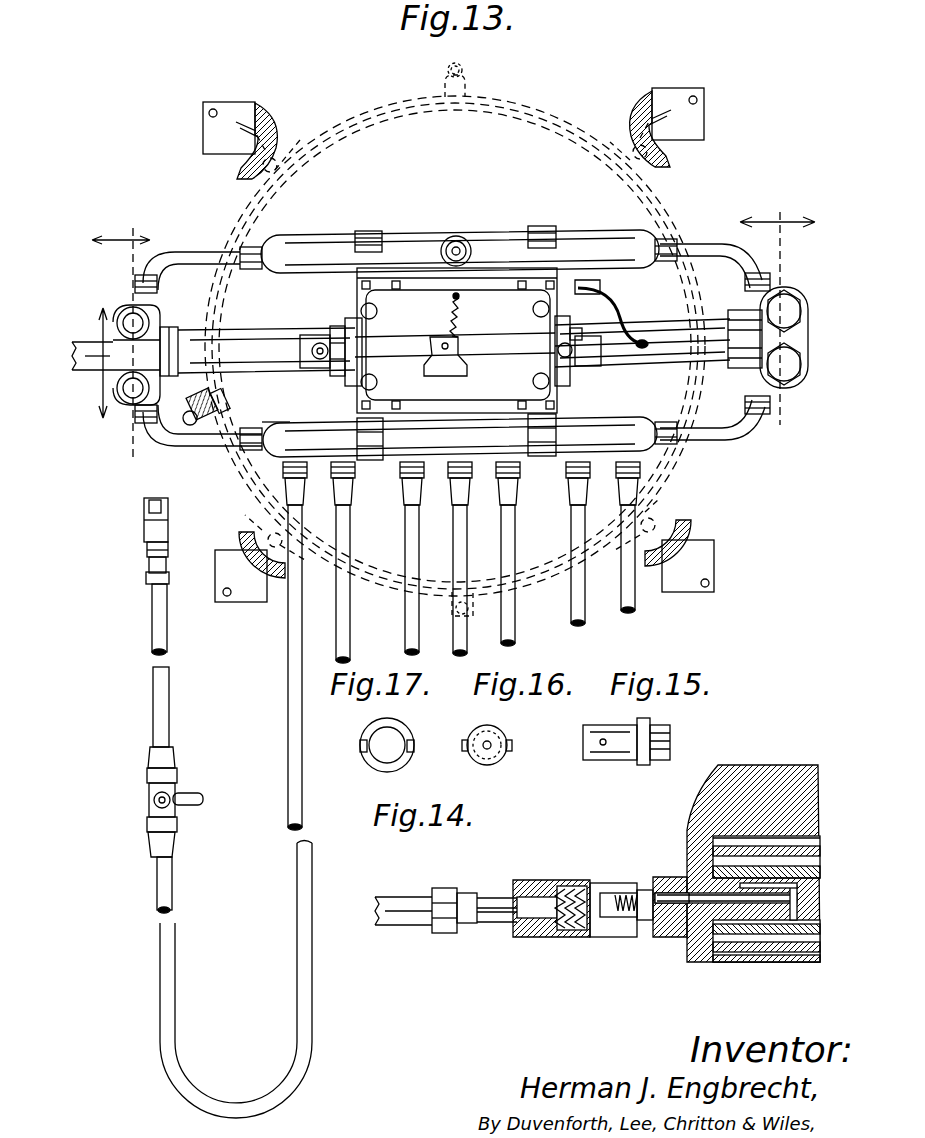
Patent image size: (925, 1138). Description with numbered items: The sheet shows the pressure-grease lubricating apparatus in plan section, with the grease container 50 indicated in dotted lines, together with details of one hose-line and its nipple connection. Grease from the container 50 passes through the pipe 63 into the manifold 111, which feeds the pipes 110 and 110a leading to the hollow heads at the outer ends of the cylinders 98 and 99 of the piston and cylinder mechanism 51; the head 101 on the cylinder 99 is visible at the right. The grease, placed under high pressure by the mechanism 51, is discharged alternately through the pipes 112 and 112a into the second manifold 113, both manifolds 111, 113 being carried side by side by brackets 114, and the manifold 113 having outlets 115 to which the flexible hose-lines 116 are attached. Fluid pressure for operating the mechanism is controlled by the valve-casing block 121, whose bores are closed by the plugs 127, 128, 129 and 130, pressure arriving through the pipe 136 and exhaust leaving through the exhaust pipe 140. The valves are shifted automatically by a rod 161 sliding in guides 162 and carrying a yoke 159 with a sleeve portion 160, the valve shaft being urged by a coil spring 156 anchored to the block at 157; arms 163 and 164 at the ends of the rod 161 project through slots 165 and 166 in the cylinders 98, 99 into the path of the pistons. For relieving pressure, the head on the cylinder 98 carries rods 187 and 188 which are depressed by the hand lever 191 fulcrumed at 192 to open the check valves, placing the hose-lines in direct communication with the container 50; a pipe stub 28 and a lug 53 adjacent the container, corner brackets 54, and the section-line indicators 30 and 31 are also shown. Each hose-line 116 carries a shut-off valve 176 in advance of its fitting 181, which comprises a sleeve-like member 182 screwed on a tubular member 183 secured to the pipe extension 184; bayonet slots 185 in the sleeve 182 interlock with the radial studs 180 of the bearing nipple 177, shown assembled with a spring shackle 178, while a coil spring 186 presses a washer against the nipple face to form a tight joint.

In FIG. 13, the pipe 28 is at (92, 356).
In FIG. 13, the section line 30 is at (121, 332).
In FIG. 13, the section line 31 is at (777, 306).
In FIG. 13, the container 50 is at (455, 113).
In FIG. 13, the piston and cylinder mechanism 51 is at (621, 366).
In FIG. 13, the lug 53 is at (475, 605).
In FIG. 13, the bracket 54 is at (258, 122).
In FIG. 13, the pipe 63 is at (462, 237).
In FIG. 13, the cylinder 98 is at (250, 330).
In FIG. 13, the cylinder 99 is at (662, 326).
In FIG. 13, the hollow head 101 is at (797, 345).
In FIG. 13, the pipe 110 is at (190, 250).
In FIG. 13, the pipe 110a is at (700, 242).
In FIG. 13, the manifold 111 is at (414, 235).
In FIG. 13, the pipe 112 is at (195, 447).
In FIG. 13, the pipe 112a is at (735, 442).
In FIG. 13, the manifold 113 is at (697, 482).
In FIG. 13, the brackets 114 is at (365, 230).
In FIG. 13, the outlets 115 is at (355, 485).
In FIG. 13, the flexible hose-lines 116 is at (345, 582).
In FIG. 13, the valve-casing block 121 is at (340, 325).
In FIG. 13, the plug 127 is at (352, 320).
In FIG. 13, the plug 128 is at (568, 320).
In FIG. 13, the plug 129 is at (270, 432).
In FIG. 13, the plug 130 is at (560, 392).
In FIG. 13, the pipe 136 is at (600, 316).
In FIG. 13, the exhaust pipe 140 is at (290, 394).
In FIG. 13, the coil spring 156 is at (458, 325).
In FIG. 13, the spring connection 157 is at (460, 312).
In FIG. 13, the yoke 159 is at (443, 78).
In FIG. 13, the sleeve portion 160 is at (465, 72).
In FIG. 13, the rod 161 is at (390, 337).
In FIG. 13, the guides 162 is at (374, 312).
In FIG. 13, the arm 163 is at (312, 338).
In FIG. 13, the arm 164 is at (566, 370).
In FIG. 13, the slot 165 is at (312, 351).
In FIG. 13, the slot 166 is at (612, 296).
In FIG. 13, the shut-off valve 176 is at (148, 800).
In FIG. 16, the bearing nipple 177 is at (583, 760).
In FIG. 14, the bearing nipple 177 is at (640, 882).
In FIG. 14, the spring shackle 178 is at (758, 838).
In FIG. 16, the studs 180 is at (567, 730).
In FIG. 14, the studs 180 is at (610, 880).
In FIG. 13, the fitting 181 is at (148, 553).
In FIG. 14, the fitting 181 is at (523, 880).
In FIG. 13, the sleeve-like member 182 is at (152, 535).
In FIG. 17, the sleeve-like member 182 is at (404, 766).
In FIG. 14, the sleeve-like member 182 is at (540, 937).
In FIG. 13, the tubular member 183 is at (150, 578).
In FIG. 14, the tubular member 183 is at (485, 923).
In FIG. 13, the pipe extension 184 is at (153, 680).
In FIG. 14, the pipe extension 184 is at (400, 925).
In FIG. 13, the bayonet slots 185 is at (144, 520).
In FIG. 17, the bayonet slots 185 is at (363, 752).
In FIG. 14, the coil spring 186 is at (567, 886).
In FIG. 13, the rod 187 is at (128, 305).
In FIG. 13, the rod 188 is at (122, 402).
In FIG. 13, the hand-operated lever 191 is at (82, 338).
In FIG. 13, the fulcrum 192 is at (172, 327).